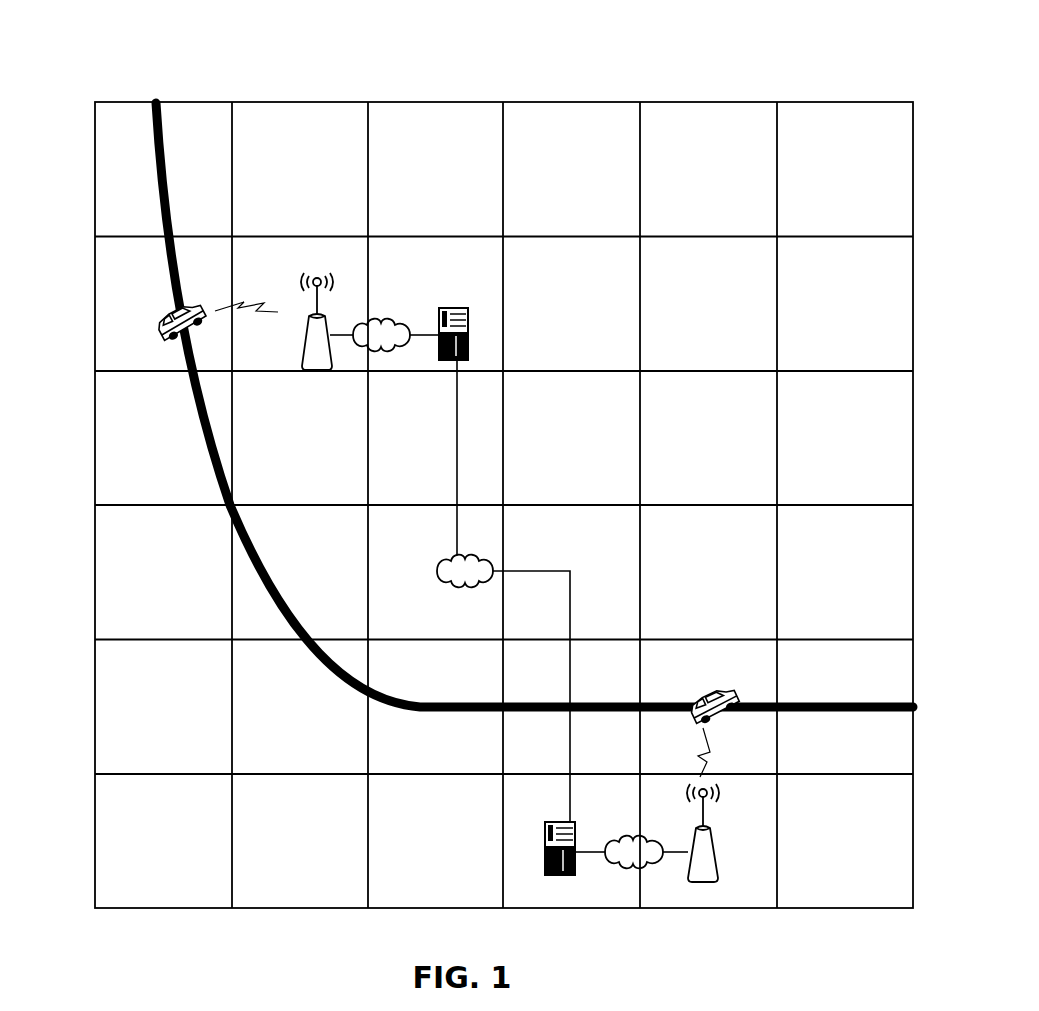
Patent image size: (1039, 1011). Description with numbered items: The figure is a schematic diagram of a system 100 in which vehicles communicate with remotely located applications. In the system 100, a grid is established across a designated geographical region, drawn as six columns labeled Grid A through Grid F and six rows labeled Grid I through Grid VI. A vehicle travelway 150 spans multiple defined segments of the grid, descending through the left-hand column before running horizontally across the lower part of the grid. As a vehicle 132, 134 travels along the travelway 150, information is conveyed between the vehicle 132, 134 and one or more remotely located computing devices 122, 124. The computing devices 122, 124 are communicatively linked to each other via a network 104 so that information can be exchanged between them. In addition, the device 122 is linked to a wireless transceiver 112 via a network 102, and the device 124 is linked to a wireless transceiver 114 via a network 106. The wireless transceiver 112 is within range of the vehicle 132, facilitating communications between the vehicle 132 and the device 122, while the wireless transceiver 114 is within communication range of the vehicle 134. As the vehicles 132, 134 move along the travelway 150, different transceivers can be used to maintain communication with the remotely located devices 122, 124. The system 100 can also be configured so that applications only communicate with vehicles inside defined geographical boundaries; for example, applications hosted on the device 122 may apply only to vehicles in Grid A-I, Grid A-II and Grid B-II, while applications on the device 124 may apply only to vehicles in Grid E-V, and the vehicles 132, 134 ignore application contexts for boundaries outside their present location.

The system 100 is at (894, 25).
The network 102 is at (381, 335).
The network 104 is at (465, 571).
The network 106 is at (634, 852).
The wireless transceiver 112 is at (317, 337).
The wireless transceiver 114 is at (704, 845).
The computing device 122 is at (455, 322).
The computing device 124 is at (561, 862).
The vehicle 132 is at (212, 330).
The vehicle 134 is at (715, 720).
The vehicle travelway 150 is at (346, 682).